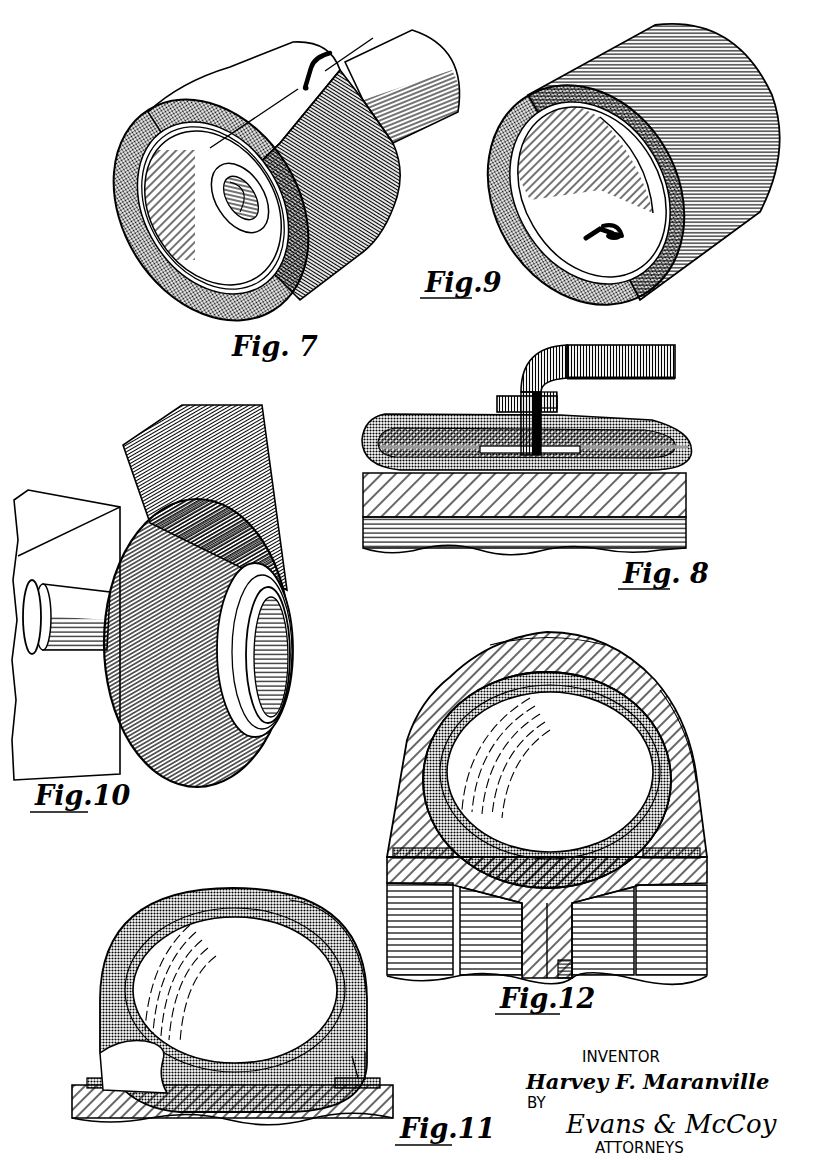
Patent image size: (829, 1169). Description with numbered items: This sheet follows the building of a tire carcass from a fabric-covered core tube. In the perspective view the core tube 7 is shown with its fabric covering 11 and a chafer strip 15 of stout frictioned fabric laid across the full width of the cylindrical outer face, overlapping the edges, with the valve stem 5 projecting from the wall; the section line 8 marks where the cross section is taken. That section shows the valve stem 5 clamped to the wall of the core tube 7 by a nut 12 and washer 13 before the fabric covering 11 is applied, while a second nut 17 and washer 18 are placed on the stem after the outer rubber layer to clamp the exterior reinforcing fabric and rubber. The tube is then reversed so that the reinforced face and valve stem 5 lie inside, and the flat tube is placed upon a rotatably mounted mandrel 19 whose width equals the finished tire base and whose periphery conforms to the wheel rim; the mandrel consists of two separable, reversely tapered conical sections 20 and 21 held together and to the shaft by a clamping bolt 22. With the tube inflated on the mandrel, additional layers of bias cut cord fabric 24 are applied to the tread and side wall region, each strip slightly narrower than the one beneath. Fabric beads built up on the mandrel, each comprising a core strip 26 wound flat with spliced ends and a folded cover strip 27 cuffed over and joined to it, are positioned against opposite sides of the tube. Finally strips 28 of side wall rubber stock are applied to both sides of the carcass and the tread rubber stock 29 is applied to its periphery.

In FIG. 7, the valve stem 5 is at (302, 74).
In FIG. 9, the valve stem 5 is at (612, 220).
In FIG. 8, the valve stem 5 is at (523, 365).
In FIG. 8, the core tube 7 is at (655, 418).
In FIG. 12, the core tube 7 is at (546, 705).
In FIG. 11, the core tube 7 is at (225, 940).
In FIG. 7, the section line 8— 8 is at (289, 87).
In FIG. 9, the fabric covering 11 is at (707, 243).
In FIG. 12, the fabric covering 11 is at (648, 778).
In FIG. 11, the fabric covering 11 is at (333, 997).
In FIG. 8, the nut 12 is at (514, 392).
In FIG. 8, the washer 13 is at (571, 421).
In FIG. 7, the chafer strip 15 is at (166, 291).
In FIG. 8, the chafer strip 15 is at (694, 452).
In FIG. 12, the chafer strip 15 is at (491, 931).
In FIG. 8, the second nut 17 is at (548, 396).
In FIG. 8, the washer 18 is at (492, 409).
In FIG. 10, the mandrel 19 is at (277, 705).
In FIG. 12, the outer conical section 20 is at (603, 931).
In FIG. 11, the outer conical section 20 is at (395, 1105).
In FIG. 12, the conical section 21 is at (420, 929).
In FIG. 11, the conical section 21 is at (72, 1105).
In FIG. 7, the clamping bolt 22 is at (233, 216).
In FIG. 10, the additional layers of cord fabric 24 is at (268, 431).
In FIG. 12, the additional layers of cord fabric 24 is at (691, 763).
In FIG. 11, the additional layers of cord fabric 24 is at (360, 948).
In FIG. 11, the core strip 26 is at (88, 1078).
In FIG. 11, the cover strip 27 is at (100, 1070).
In FIG. 12, the strips of side wall rubber stock 28 is at (395, 800).
In FIG. 12, the tread rubber stock 29 is at (588, 645).